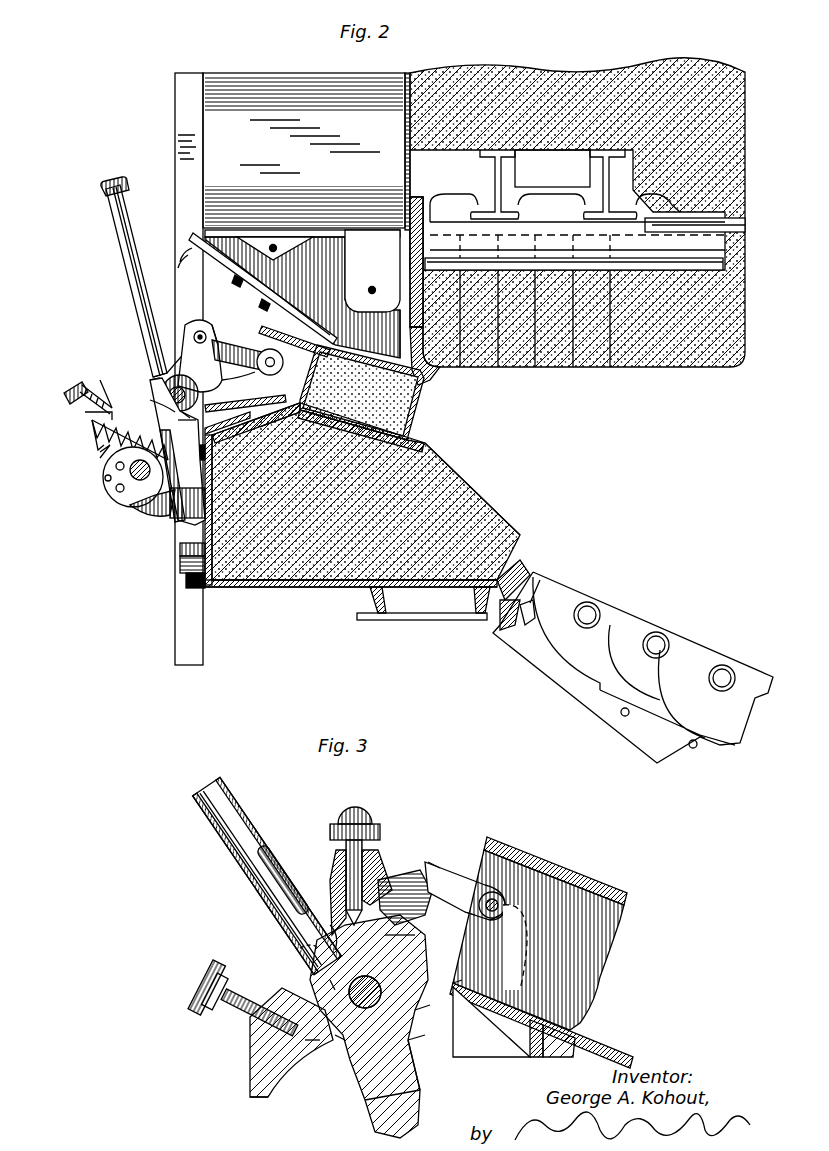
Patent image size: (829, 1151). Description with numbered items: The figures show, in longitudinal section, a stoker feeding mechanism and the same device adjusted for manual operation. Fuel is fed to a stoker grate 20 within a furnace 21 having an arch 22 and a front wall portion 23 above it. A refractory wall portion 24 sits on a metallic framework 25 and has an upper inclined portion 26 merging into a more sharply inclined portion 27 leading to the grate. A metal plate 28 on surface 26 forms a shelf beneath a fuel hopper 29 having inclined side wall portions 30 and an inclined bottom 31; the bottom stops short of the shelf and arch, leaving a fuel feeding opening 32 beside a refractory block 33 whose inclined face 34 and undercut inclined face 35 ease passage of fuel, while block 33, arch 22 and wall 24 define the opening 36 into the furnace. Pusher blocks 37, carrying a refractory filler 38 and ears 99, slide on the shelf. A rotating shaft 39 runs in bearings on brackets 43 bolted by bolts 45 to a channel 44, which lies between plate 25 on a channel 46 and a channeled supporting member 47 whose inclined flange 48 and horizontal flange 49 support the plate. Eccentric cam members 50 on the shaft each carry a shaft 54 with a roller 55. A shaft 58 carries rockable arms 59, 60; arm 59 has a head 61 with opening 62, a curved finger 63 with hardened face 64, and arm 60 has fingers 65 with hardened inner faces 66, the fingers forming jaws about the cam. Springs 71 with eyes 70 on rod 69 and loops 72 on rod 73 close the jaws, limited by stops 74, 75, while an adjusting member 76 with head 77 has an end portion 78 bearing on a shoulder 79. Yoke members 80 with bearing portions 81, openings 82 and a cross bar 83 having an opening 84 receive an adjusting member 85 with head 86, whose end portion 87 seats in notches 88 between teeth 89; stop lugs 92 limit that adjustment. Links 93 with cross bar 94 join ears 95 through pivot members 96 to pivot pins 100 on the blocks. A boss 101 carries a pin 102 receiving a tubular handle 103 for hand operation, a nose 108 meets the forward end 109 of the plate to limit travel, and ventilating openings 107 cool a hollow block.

In FIG. 2, the stoker grate 20 is at (598, 580).
In FIG. 2, the furnace 21 is at (373, 506).
In FIG. 2, the arch 22 is at (570, 365).
In FIG. 2, the front wall portion 23 is at (622, 66).
In FIG. 2, the wall portion 24 is at (262, 588).
In FIG. 2, the metallic framework 25 is at (340, 592).
In FIG. 2, the upper inclined portion 26 is at (366, 491).
In FIG. 3, the upper inclined portion 26 is at (560, 1060).
In FIG. 2, the more sharply inclined portion 27 is at (505, 505).
In FIG. 2, the metal plate 28 is at (305, 425).
In FIG. 3, the metal plate 28 is at (605, 1048).
In FIG. 2, the fuel hopper 29 is at (405, 150).
In FIG. 2, the inclined side wall portions 30 is at (232, 122).
In FIG. 2, the inclined bottom 31 is at (205, 262).
In FIG. 2, the fuel feeding opening 32 is at (297, 330).
In FIG. 2, the block of refractory material 33 is at (425, 350).
In FIG. 2, the inclined face 34 is at (386, 300).
In FIG. 2, the undercut inclined face 35 is at (380, 338).
In FIG. 2, the opening 36 is at (412, 425).
In FIG. 2, the pusher blocks 37 is at (288, 332).
In FIG. 3, the pusher blocks 37 is at (592, 885).
In FIG. 2, the filler 38 is at (420, 397).
In FIG. 2, the rotating shaft 39 is at (133, 502).
In FIG. 2, the brackets 43 is at (195, 548).
In FIG. 2, the channel 44 is at (192, 566).
In FIG. 2, the bolts 45 is at (195, 582).
In FIG. 2, the channel 46 is at (420, 612).
In FIG. 2, the channeled supporting member 47 is at (238, 418).
In FIG. 3, the channeled supporting member 47 is at (533, 1040).
In FIG. 2, the inclined flange 48 is at (226, 392).
In FIG. 3, the inclined flange 48 is at (520, 1010).
In FIG. 2, the horizontal flange 49 is at (262, 447).
In FIG. 2, the eccentric or cam members 50 is at (118, 502).
In FIG. 2, the shaft 54 is at (108, 478).
In FIG. 2, the roller 55 is at (118, 486).
In FIG. 2, the shaft 58 is at (150, 390).
In FIG. 3, the shaft 58 is at (418, 995).
In FIG. 2, the arm 59 is at (240, 457).
In FIG. 3, the arm 59 is at (428, 1052).
In FIG. 2, the arm 60 is at (95, 426).
In FIG. 3, the arm 60 is at (260, 1055).
In FIG. 3, the upper enlarged head portion 61 is at (418, 1000).
In FIG. 3, the opening 62 is at (428, 1035).
In FIG. 2, the dependent curved finger 63 is at (200, 490).
In FIG. 3, the dependent curved finger 63 is at (380, 1078).
In FIG. 2, the face 64 is at (150, 506).
In FIG. 2, the dependent fingers 65 is at (95, 442).
In FIG. 3, the dependent fingers 65 is at (290, 1105).
In FIG. 2, the hardened inner faces 66 is at (110, 468).
In FIG. 2, the steel rod 69 is at (100, 442).
In FIG. 2, the eyes 70 is at (92, 432).
In FIG. 2, the springs 71 is at (100, 454).
In FIG. 2, the eyes or loops 72 is at (232, 438).
In FIG. 2, the rod 73 is at (152, 407).
In FIG. 2, the stop 74 is at (190, 418).
In FIG. 2, the stop 75 is at (190, 410).
In FIG. 2, the screw-threaded adjusting member 76 is at (100, 380).
In FIG. 3, the screw-threaded adjusting member 76 is at (240, 1015).
In FIG. 2, the enlarged head 77 is at (72, 385).
In FIG. 3, the enlarged head 77 is at (200, 985).
In FIG. 3, the end portion 78 is at (310, 1045).
In FIG. 3, the shoulder 79 is at (338, 1045).
In FIG. 2, the yoke members 80 is at (172, 330).
In FIG. 3, the bearing portions 81 is at (330, 985).
In FIG. 2, the openings 82 is at (180, 391).
In FIG. 3, the cross bar 83 is at (372, 870).
In FIG. 3, the opening 84 is at (338, 878).
In FIG. 3, the screw-threaded adjusting member 85 is at (338, 845).
In FIG. 3, the head 86 is at (378, 828).
In FIG. 3, the end portion 87 is at (385, 870).
In FIG. 3, the grooves or notches 88 is at (380, 956).
In FIG. 3, the ribs or teeth 89 is at (330, 928).
In FIG. 3, the depending stop lugs 92 is at (400, 935).
In FIG. 2, the links 93 is at (222, 340).
In FIG. 3, the links 93 is at (470, 855).
In FIG. 3, the cross bar 94 is at (440, 868).
In FIG. 2, the ears 95 is at (200, 330).
In FIG. 2, the pivot members 96 is at (200, 356).
In FIG. 3, the pivot members 96 is at (355, 807).
In FIG. 2, the ears 99 is at (290, 333).
In FIG. 3, the ears 99 is at (510, 850).
In FIG. 2, the pivot pins 100 is at (272, 378).
In FIG. 3, the pivot pins 100 is at (505, 912).
In FIG. 2, the enlargement or boss 101 is at (150, 375).
In FIG. 3, the enlargement or boss 101 is at (330, 963).
In FIG. 3, the rod or pin 102 is at (270, 888).
In FIG. 2, the tubular member 103 is at (118, 226).
In FIG. 3, the tubular member 103 is at (224, 830).
In FIG. 2, the ventilating openings 107 is at (110, 496).
In FIG. 2, the forward projection or nose 108 is at (232, 355).
In FIG. 3, the forward projection or nose 108 is at (470, 918).
In FIG. 2, the forward end 109 is at (244, 378).
In FIG. 3, the forward end 109 is at (458, 980).